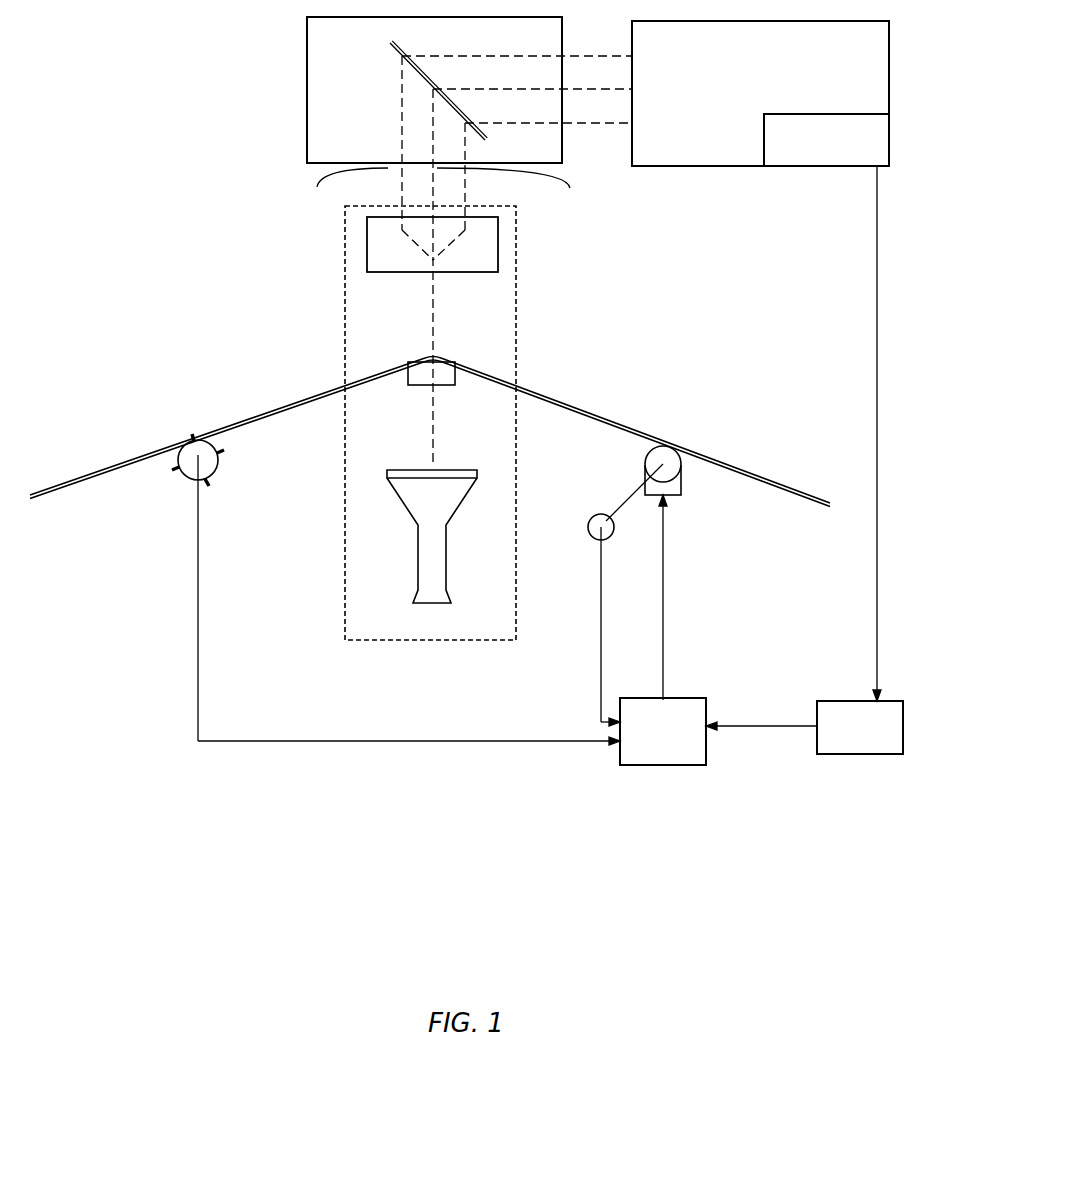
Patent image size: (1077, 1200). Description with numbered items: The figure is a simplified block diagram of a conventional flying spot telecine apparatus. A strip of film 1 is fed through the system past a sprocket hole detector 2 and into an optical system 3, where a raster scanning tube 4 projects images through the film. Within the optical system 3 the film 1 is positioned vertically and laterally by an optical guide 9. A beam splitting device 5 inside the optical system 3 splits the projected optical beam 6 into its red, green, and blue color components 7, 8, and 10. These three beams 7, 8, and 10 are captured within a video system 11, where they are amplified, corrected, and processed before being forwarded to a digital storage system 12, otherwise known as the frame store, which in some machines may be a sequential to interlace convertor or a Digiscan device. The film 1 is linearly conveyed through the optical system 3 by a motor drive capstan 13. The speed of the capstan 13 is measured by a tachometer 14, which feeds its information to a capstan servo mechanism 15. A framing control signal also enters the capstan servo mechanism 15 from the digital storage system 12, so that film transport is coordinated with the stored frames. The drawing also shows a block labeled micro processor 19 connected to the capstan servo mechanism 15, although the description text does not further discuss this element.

The strip of film 1 is at (92, 468).
The sprocket hole detector 2 is at (190, 470).
The optical system 3 is at (343, 330).
The raster scanning tube 4 is at (448, 533).
The beam splitting device 5 is at (500, 237).
The projected optical beam 6 is at (436, 297).
The red color component 7 is at (371, 158).
The green color component 8 is at (505, 189).
The optical guide 9 is at (458, 380).
The blue color component 10 is at (468, 195).
The video system 11 is at (306, 120).
The digital storage system 12 is at (675, 170).
The motor drive capstan 13 is at (680, 466).
The tachometer 14 is at (597, 514).
The capstan servo mechanism 15 is at (697, 750).
The microprocessor 19 is at (817, 748).